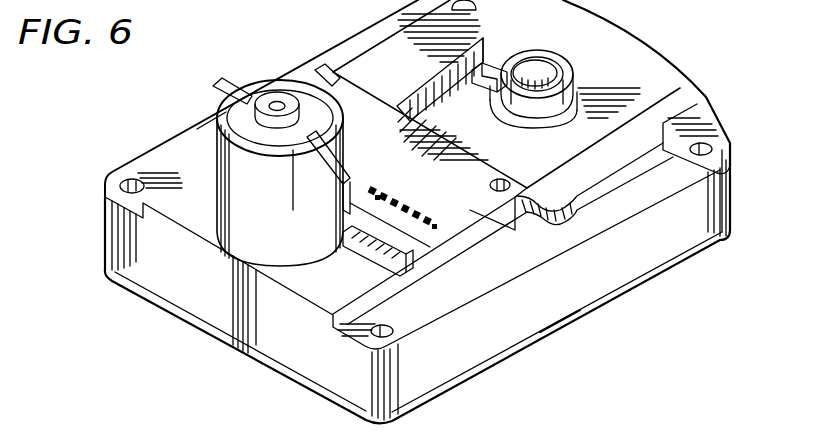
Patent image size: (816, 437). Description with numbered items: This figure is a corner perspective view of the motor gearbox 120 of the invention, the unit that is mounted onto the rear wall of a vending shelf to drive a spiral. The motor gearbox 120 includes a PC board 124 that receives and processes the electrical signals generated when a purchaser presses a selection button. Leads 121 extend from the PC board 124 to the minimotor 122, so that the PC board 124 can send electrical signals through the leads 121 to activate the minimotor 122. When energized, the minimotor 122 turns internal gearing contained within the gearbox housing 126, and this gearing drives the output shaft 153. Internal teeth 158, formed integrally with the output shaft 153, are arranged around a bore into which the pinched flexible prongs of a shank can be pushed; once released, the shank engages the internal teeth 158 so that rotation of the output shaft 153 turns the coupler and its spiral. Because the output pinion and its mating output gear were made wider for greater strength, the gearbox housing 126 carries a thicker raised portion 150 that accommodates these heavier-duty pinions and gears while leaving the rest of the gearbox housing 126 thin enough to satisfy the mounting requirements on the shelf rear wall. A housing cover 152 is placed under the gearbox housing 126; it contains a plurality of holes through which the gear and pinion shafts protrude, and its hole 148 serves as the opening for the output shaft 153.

The motor gearbox 120 is at (627, 302).
The leads 121 is at (197, 129).
The minimotor 122 is at (217, 238).
The PC board 124 is at (360, 100).
The gearbox housing 126 is at (272, 335).
The hole 148 is at (577, 108).
The thicker raised portion 150 is at (600, 194).
The housing cover 152 is at (562, 326).
The output shaft 153 is at (578, 88).
The internal teeth 158 is at (530, 60).